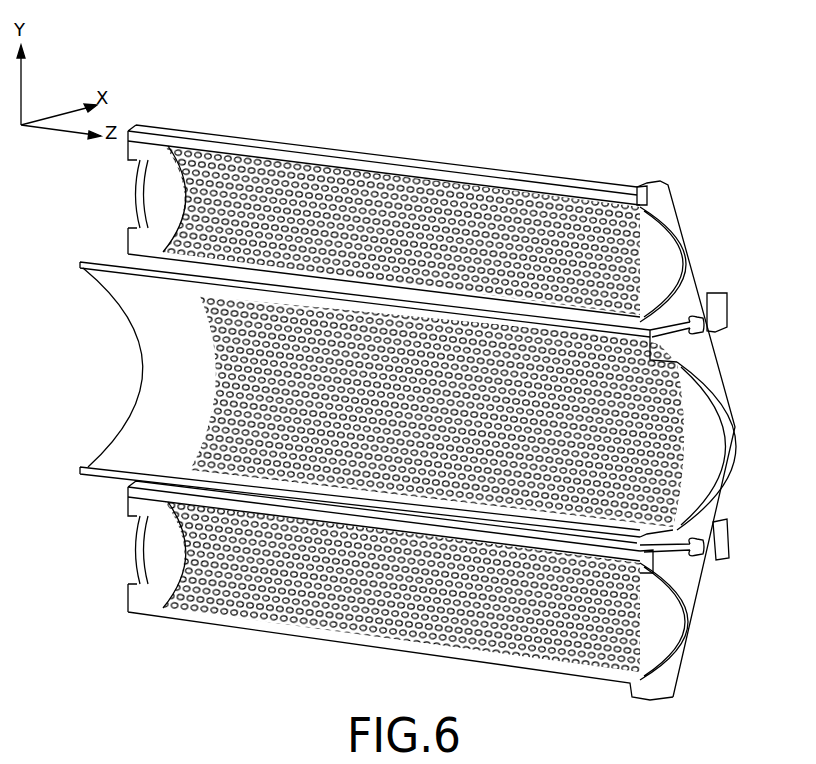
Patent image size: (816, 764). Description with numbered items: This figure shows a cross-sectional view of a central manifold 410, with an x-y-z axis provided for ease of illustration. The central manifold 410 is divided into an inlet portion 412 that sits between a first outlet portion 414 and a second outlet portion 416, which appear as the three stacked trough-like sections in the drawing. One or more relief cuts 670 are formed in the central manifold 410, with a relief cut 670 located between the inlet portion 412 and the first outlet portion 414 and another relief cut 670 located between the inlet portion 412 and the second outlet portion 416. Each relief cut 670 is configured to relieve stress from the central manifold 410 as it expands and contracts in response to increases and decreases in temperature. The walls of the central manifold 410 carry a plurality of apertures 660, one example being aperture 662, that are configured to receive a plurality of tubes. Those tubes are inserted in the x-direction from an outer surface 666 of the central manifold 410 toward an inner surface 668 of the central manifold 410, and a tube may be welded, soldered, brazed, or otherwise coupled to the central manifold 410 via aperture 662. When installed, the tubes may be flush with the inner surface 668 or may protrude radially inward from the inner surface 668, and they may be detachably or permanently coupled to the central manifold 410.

The central manifold 410 is at (540, 182).
The inlet portion 412 is at (385, 399).
The first outlet portion 414 is at (370, 221).
The second outlet portion 416 is at (165, 573).
The plurality of apertures 660 is at (150, 350).
The aperture 662 is at (683, 218).
The outer surface 666 is at (634, 171).
The inner surface 668 is at (140, 452).
The relief cut 670 is at (746, 580).